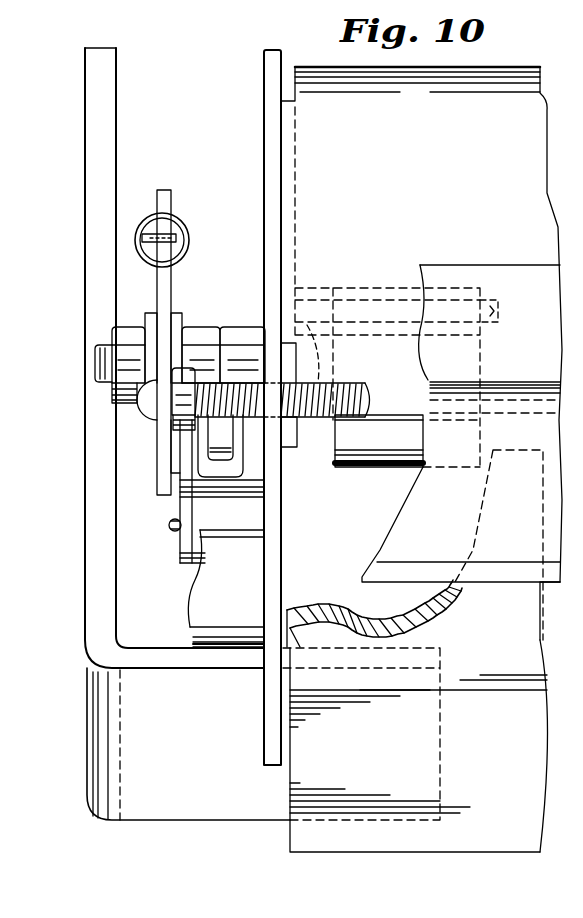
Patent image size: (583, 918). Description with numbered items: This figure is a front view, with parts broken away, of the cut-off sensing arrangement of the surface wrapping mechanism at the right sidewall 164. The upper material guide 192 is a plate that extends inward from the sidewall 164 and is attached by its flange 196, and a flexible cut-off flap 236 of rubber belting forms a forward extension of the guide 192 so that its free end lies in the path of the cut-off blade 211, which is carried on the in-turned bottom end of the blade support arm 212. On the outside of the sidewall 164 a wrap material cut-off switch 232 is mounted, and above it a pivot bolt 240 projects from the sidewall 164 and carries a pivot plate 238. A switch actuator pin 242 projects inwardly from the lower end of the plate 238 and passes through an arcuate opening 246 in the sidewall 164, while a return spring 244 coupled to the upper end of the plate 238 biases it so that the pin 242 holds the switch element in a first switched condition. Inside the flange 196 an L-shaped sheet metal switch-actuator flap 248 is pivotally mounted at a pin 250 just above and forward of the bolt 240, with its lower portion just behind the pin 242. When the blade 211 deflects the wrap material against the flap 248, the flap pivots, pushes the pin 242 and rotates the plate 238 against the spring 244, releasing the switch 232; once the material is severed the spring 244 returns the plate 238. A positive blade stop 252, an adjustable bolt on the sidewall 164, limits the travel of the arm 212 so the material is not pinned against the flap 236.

The sidewall 164 is at (268, 166).
The upper material guide 192 is at (437, 157).
The flange 196 is at (275, 130).
The cut-off blade 211 is at (290, 835).
The blade support arm 212 is at (85, 82).
The wrap material cut-off switch 232 is at (180, 548).
The cut-off flap 236 is at (498, 540).
The pivot plate 238 is at (160, 192).
The pivot bolt 240 is at (95, 366).
The switch actuator pin 242 is at (318, 418).
The return spring 244 is at (190, 232).
The arcuate opening 246 is at (281, 470).
The switch-actuator flap 248 is at (385, 467).
The pin 250 is at (498, 303).
The positive blade stop 252 is at (190, 623).